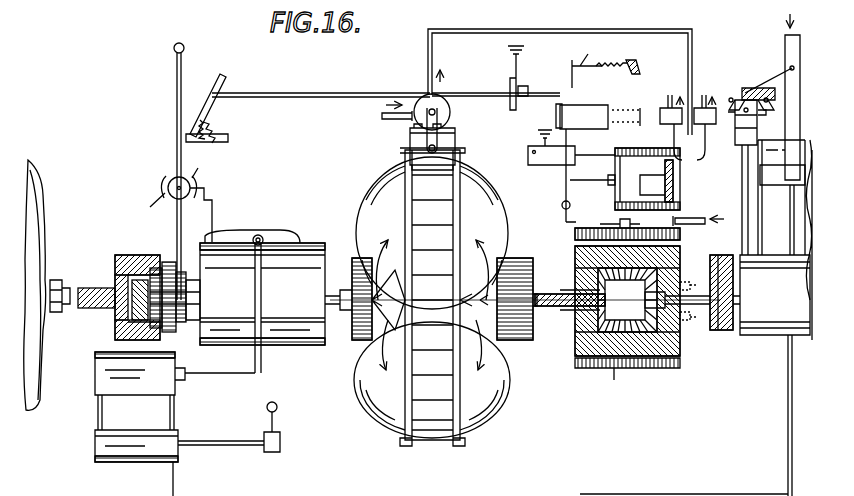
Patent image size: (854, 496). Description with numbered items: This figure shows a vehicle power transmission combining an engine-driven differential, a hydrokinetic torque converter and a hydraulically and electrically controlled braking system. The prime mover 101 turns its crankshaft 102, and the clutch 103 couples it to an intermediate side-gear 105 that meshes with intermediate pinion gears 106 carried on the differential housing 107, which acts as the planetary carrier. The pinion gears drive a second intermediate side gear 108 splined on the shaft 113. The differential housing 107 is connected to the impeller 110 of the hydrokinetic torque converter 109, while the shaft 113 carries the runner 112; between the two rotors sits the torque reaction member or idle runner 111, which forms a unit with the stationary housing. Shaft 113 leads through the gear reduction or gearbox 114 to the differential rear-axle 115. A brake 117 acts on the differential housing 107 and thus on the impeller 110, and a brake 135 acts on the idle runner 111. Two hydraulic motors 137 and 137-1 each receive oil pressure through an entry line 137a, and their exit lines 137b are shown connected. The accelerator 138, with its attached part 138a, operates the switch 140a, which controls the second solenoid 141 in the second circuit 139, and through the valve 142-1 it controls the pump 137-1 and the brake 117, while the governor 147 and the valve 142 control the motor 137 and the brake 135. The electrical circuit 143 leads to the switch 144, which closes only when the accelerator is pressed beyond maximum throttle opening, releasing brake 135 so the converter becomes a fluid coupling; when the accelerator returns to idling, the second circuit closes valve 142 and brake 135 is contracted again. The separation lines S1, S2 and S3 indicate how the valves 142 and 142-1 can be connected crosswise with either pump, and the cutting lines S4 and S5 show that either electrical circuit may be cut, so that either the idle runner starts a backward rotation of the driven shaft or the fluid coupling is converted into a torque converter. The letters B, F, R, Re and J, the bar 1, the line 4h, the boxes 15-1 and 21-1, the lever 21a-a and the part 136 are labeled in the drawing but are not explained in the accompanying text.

The lever bar 1 is at (785, 50).
The connecting line 4h is at (788, 391).
The control box 15-1 is at (100, 380).
The control box 21-1 is at (100, 445).
The hand lever 21a-a is at (282, 446).
The prime mover 101 is at (785, 240).
The crankshaft 102 is at (736, 298).
The clutch 103 is at (718, 332).
The intermediate side-gear 105 is at (690, 308).
The intermediate pinion gears 106 is at (678, 258).
The differential housing 107 is at (578, 280).
The intermediate side gear 108 is at (580, 330).
The hydrokinetic torque converter 109 is at (506, 212).
The impeller rotor 110 is at (493, 303).
The torque reaction member 111 is at (452, 207).
The runner rotor 112 is at (379, 304).
The shaft 113 is at (338, 304).
The gear reduction 114 is at (262, 301).
The differential rear-axle 115 is at (33, 250).
The brake 117 is at (575, 232).
The brake 135 is at (494, 158).
The gear housing 136 is at (448, 143).
The motor 137 is at (450, 108).
The motor 137-1 is at (683, 190).
The entry line 137a is at (398, 118).
The exit line 137b is at (428, 47).
The accelerator 138 is at (221, 68).
The rod 138a is at (310, 86).
The second circuit 139 is at (520, 64).
The contact 140a is at (530, 88).
The second solenoid 141 is at (556, 117).
The valve 142 is at (742, 90).
The valve 142-1 is at (668, 104).
The electrical circuit 143 is at (582, 66).
The switch 144 is at (596, 68).
The governor 147 is at (756, 126).
The battery B is at (571, 148).
The forward F is at (110, 318).
The junction J is at (486, 178).
The reverse R is at (404, 182).
The reverse gear Re is at (184, 310).
The separation line S1 is at (689, 159).
The separation line S2 is at (674, 145).
The separation line S3 is at (700, 146).
The cutting line S4 is at (502, 121).
The cutting line S5 is at (601, 163).